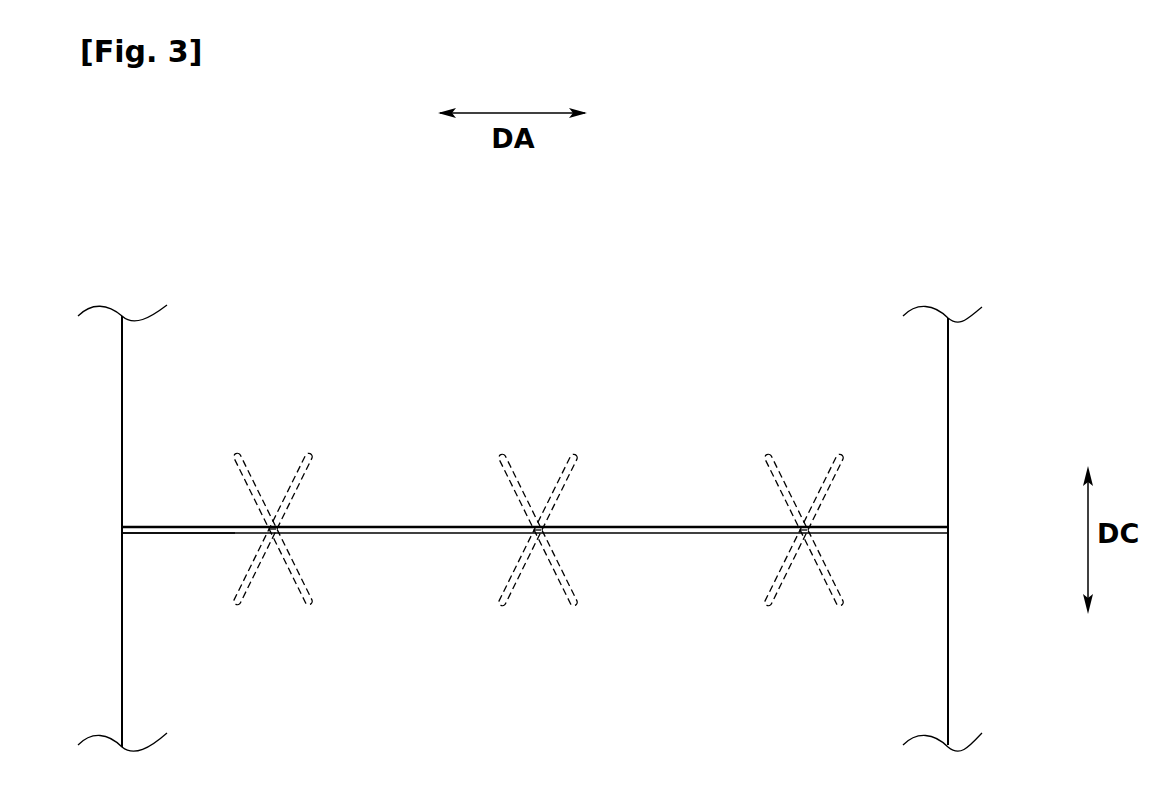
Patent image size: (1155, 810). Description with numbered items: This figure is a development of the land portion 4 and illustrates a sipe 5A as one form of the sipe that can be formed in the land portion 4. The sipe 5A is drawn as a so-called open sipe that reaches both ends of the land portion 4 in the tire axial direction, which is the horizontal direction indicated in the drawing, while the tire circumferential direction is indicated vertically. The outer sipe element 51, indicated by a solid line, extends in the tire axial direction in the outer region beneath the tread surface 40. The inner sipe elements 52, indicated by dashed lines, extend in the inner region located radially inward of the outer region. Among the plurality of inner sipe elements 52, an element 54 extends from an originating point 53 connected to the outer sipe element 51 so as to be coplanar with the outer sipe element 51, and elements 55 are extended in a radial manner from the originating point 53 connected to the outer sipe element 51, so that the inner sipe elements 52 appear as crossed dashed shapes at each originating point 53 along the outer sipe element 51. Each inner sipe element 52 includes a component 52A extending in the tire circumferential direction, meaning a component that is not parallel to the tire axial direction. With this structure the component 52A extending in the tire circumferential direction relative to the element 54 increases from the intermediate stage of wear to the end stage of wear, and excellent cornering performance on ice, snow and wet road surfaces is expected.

The land portion 4 is at (918, 412).
The sipe 5A is at (700, 526).
The tread surface 40 is at (507, 473).
The outer sipe element 51 is at (390, 534).
The inner sipe element 52 is at (303, 463).
The component 52A is at (838, 463).
The originating point 53 is at (278, 528).
The element 54 is at (223, 534).
The elements 55 is at (515, 460).